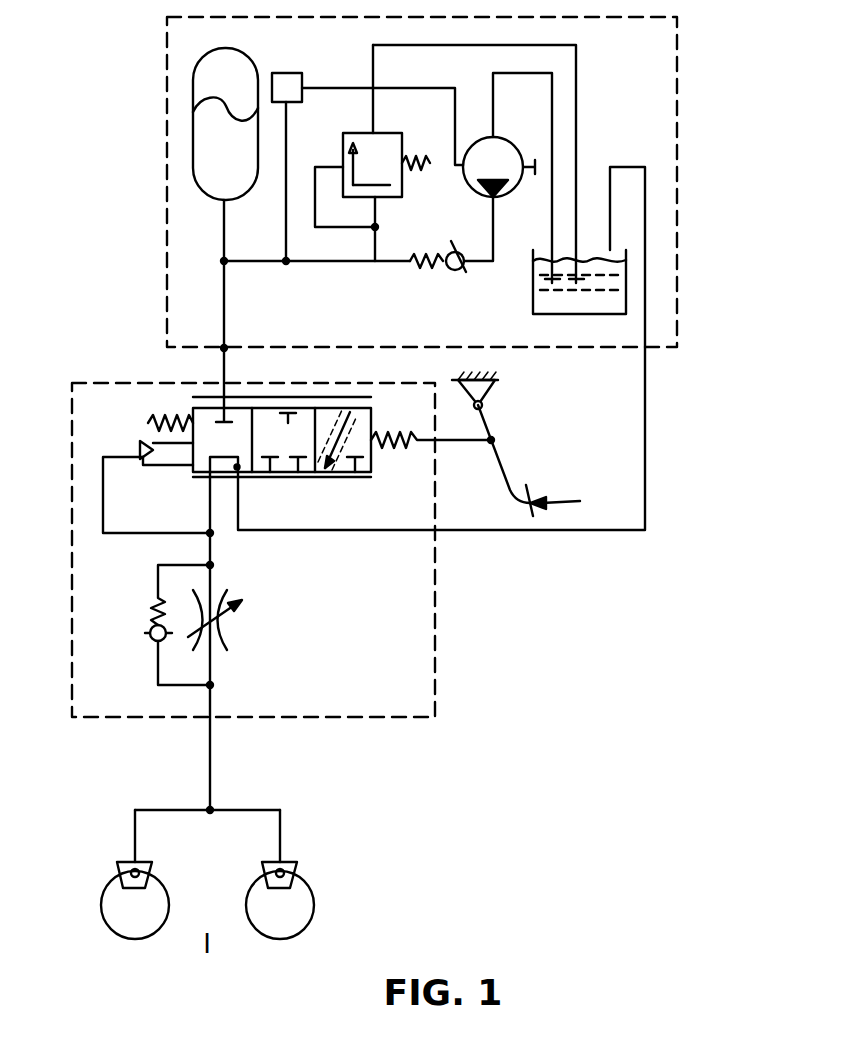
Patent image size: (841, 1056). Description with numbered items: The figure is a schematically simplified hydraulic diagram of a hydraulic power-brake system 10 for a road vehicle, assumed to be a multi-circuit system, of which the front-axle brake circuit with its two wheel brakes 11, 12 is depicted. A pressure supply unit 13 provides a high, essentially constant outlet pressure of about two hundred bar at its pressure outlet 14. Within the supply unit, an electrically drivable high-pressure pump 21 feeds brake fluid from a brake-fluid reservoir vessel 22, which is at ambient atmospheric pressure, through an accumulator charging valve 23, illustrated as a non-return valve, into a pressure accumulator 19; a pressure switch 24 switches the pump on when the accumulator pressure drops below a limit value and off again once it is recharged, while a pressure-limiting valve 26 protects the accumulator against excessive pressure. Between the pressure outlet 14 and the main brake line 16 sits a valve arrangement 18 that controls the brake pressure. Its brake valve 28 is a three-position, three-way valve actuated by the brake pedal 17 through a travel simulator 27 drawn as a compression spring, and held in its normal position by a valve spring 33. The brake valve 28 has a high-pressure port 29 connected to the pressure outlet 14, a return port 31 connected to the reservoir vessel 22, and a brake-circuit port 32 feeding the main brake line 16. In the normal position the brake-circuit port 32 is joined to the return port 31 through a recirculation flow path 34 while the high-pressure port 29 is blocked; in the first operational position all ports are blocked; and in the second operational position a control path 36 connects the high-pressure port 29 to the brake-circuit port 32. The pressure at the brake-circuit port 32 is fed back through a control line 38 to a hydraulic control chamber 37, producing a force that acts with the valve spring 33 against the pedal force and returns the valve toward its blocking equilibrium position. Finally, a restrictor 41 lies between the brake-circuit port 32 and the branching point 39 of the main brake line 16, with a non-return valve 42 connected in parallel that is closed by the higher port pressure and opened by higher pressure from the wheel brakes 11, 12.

The hydraulic power-brake system 10 is at (137, 128).
The wheel brake 11 is at (108, 918).
The wheel brake 12 is at (295, 918).
The pressure supply unit 13 is at (662, 68).
The pressure outlet 14 is at (226, 348).
The main brake line 16 is at (213, 772).
The brake pedal 17 is at (498, 455).
The valve arrangement 18 is at (393, 670).
The pressure accumulator 19 is at (241, 192).
The high-pressure pump 21 is at (505, 148).
The brake-fluid reservoir vessel 22 is at (617, 303).
The accumulator charging valve 23 is at (455, 271).
The pressure switch 24 is at (291, 73).
The pressure-limiting valve 26 is at (391, 147).
The travel simulator 27 is at (415, 450).
The brake valve 28 is at (372, 422).
The high-pressure port 29 is at (222, 397).
The return port 31 is at (240, 470).
The brake-circuit port 32 is at (208, 468).
The valve spring 33 is at (150, 415).
The recirculation flow path 34 is at (210, 456).
The control path 36 is at (335, 470).
The hydraulic control chamber 37 is at (140, 448).
The control line 38 is at (118, 534).
The branching point 39 is at (212, 812).
The restrictor 41 is at (220, 631).
The non-return valve 42 is at (152, 621).